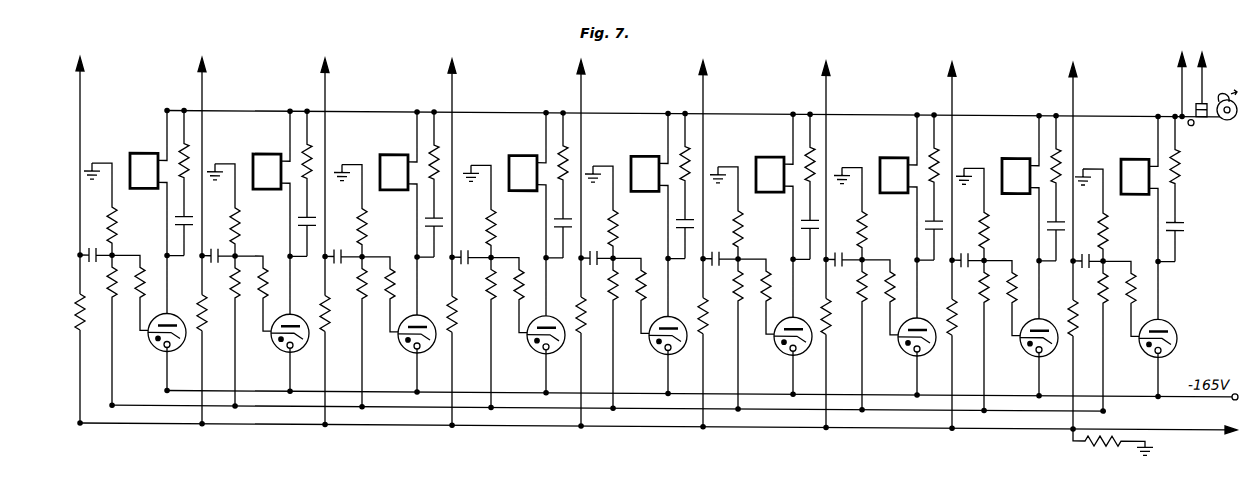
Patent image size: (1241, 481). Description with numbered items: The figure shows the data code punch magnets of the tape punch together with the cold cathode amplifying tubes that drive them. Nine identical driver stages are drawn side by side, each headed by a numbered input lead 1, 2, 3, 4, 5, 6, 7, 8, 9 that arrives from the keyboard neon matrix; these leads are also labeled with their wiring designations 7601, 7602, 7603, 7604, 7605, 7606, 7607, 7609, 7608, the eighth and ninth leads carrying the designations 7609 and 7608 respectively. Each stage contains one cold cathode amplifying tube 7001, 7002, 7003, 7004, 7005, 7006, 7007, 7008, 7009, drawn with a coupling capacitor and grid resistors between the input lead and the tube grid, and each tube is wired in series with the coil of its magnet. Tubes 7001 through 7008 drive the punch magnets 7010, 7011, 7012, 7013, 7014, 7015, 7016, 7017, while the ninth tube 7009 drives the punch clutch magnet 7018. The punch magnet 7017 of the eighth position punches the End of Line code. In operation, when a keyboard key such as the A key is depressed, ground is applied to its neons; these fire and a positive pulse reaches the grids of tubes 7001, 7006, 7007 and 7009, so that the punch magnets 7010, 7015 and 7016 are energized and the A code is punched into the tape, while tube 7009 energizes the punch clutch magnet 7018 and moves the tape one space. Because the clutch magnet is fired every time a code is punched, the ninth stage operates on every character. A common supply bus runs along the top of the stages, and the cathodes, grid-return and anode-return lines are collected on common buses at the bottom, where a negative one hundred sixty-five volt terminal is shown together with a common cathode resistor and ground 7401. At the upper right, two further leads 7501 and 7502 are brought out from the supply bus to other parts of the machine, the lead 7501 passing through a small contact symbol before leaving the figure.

The input lead 1 is at (75, 240).
The input lead 2 is at (197, 241).
The input lead 3 is at (320, 241).
The input lead 4 is at (447, 242).
The input lead 5 is at (576, 243).
The input lead 6 is at (698, 244).
The input lead 7 is at (821, 244).
The punch magnet position 8 is at (947, 245).
The input lead 9 is at (1068, 246).
The cold cathode amplifying tube 7001 is at (166, 352).
The cold cathode amplifying tube 7002 is at (289, 352).
The cold cathode amplifying tube 7003 is at (416, 352).
The cold cathode amplifying tube 7004 is at (545, 352).
The cold cathode amplifying tube 7005 is at (667, 352).
The cold cathode amplifying tube 7006 is at (792, 352).
The cold cathode amplifying tube 7007 is at (916, 352).
The cold cathode amplifying tube 7008 is at (1038, 352).
The cold cathode amplifying tube 7009 is at (1157, 352).
The punch magnet 7010 is at (147, 153).
The punch magnet 7011 is at (270, 153).
The punch magnet 7012 is at (397, 153).
The punch magnet 7013 is at (526, 153).
The punch magnet 7014 is at (648, 153).
The punch magnet 7015 is at (773, 153).
The punch magnet 7016 is at (897, 153).
The punch magnet 7017 is at (1019, 153).
The punch clutch magnet 7018 is at (1138, 153).
The input lead 7601 is at (81, 86).
The input lead 7602 is at (203, 86).
The input lead 7603 is at (326, 86).
The input lead 7604 is at (453, 86).
The input lead 7605 is at (582, 86).
The input lead 7606 is at (704, 86).
The input lead 7607 is at (827, 86).
The input lead 7608 is at (1074, 86).
The input lead 7609 is at (953, 86).
The resistor 7401 is at (1180, 438).
The output lead 7501 is at (1203, 64).
The output lead 7502 is at (1180, 77).